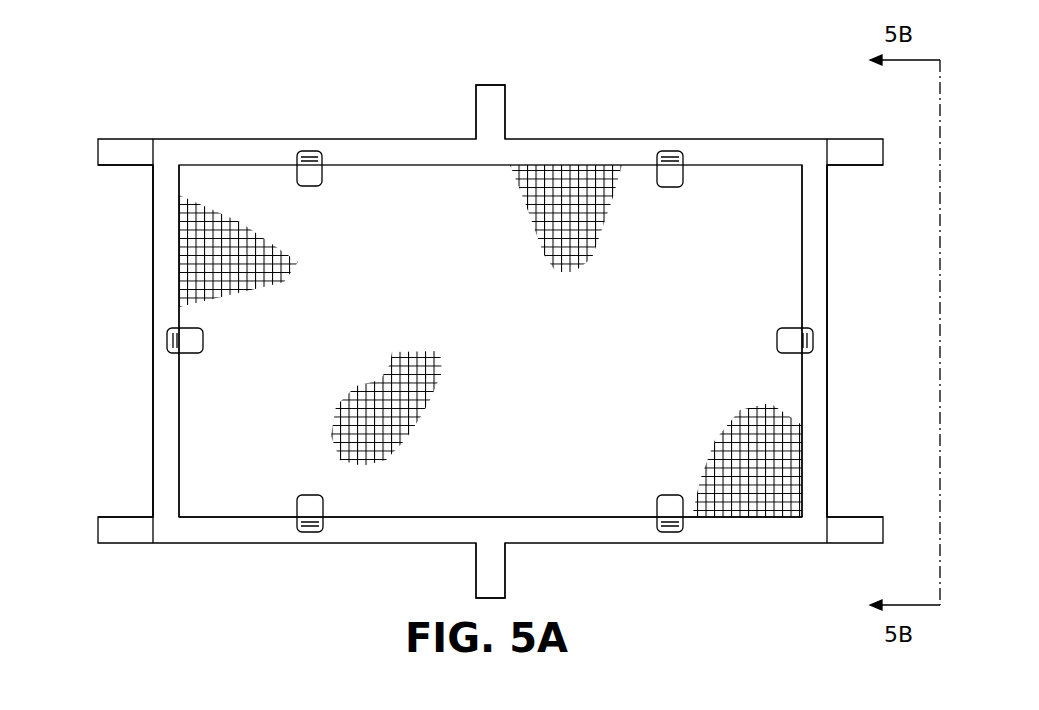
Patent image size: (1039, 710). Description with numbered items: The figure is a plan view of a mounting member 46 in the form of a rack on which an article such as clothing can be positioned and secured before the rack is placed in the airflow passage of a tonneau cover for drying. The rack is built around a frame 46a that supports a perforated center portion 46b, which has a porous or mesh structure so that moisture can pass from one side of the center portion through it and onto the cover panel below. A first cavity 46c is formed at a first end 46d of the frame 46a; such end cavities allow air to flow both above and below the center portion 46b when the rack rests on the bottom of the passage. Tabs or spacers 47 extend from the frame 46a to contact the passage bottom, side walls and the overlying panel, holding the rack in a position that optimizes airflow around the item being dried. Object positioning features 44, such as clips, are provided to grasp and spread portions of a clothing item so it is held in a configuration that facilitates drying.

The mounting member 46 is at (165, 118).
The frame 46a is at (607, 528).
The perforated center portion 46b is at (658, 266).
The first cavity 46c is at (168, 386).
The first end 46d is at (168, 458).
The tabs or spacers 47 is at (506, 93).
The object positioning feature 44 is at (183, 328).